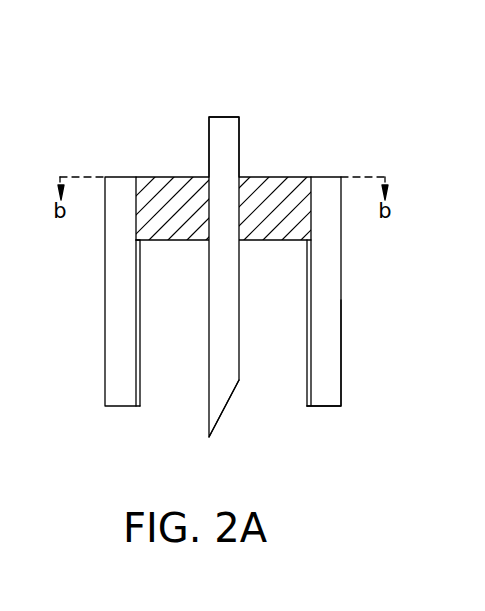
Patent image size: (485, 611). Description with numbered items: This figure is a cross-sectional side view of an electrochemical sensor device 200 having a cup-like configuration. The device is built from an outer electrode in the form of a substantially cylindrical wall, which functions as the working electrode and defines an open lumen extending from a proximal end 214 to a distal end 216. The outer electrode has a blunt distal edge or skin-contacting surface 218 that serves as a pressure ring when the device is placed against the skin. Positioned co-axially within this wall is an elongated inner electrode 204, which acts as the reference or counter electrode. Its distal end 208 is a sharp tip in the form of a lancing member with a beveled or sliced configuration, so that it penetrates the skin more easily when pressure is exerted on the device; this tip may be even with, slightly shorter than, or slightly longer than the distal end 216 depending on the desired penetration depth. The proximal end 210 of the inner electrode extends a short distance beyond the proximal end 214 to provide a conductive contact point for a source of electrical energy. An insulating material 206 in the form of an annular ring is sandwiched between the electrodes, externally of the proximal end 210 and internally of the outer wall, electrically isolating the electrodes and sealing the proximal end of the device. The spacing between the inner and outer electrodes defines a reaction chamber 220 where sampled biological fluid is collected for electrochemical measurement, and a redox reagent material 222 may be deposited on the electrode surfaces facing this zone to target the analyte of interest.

The sensor device 200 is at (364, 254).
The inner electrode 204 is at (220, 283).
The insulating material 206 is at (190, 177).
The distal end of inner electrode 208 is at (223, 394).
The proximal end of inner electrode 210 is at (224, 130).
The proximal end of outer electrode 214 is at (322, 177).
The distal end of outer electrode 216 is at (113, 383).
The skin-contacting surface 218 is at (341, 406).
The reaction chamber 220 is at (140, 243).
The redox reagent material 222 is at (136, 328).